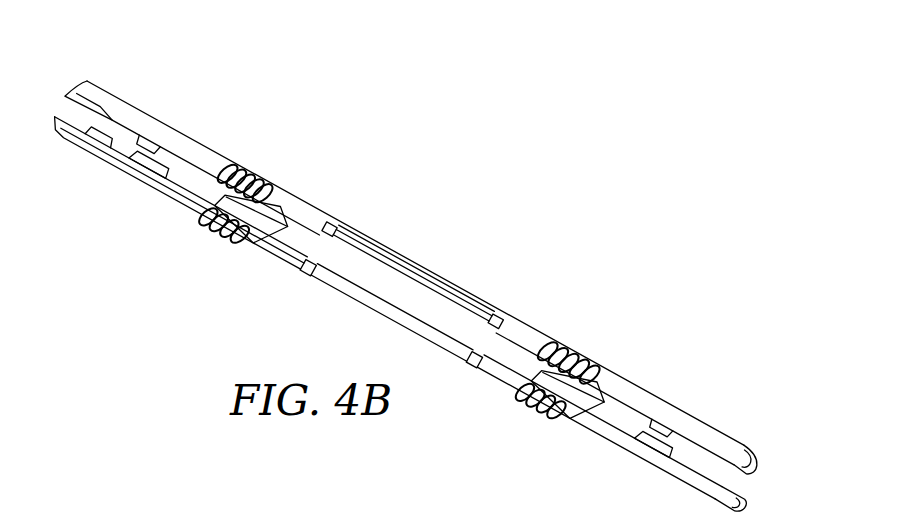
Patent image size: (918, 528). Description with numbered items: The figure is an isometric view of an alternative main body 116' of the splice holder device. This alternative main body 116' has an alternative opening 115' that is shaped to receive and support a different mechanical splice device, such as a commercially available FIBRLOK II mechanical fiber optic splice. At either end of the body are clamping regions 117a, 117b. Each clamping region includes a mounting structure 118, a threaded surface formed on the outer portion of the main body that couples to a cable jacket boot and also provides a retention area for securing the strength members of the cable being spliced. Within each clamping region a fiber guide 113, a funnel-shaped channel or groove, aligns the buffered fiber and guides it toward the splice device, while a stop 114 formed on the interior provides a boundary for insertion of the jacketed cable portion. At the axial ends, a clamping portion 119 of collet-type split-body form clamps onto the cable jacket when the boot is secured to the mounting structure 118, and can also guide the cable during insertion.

The fiber guide 113 is at (248, 218).
The stop 114 is at (128, 164).
The alternative opening 115' is at (402, 283).
The alternative main body 116' is at (405, 270).
The clamping region 117a is at (588, 442).
The clamping region 117b is at (157, 221).
The mounting structure 118 is at (250, 174).
The clamping portion 119 is at (70, 88).